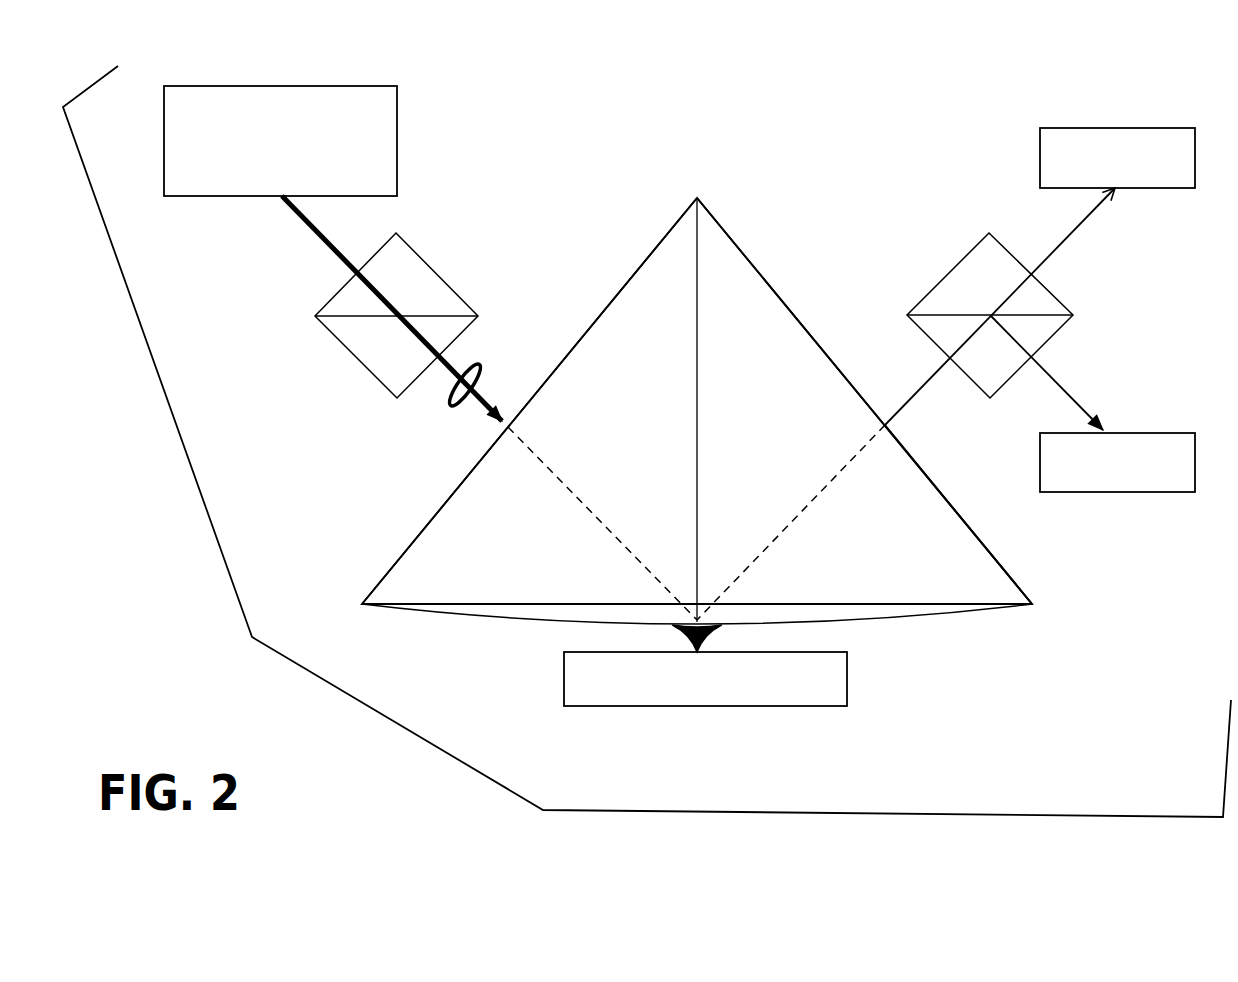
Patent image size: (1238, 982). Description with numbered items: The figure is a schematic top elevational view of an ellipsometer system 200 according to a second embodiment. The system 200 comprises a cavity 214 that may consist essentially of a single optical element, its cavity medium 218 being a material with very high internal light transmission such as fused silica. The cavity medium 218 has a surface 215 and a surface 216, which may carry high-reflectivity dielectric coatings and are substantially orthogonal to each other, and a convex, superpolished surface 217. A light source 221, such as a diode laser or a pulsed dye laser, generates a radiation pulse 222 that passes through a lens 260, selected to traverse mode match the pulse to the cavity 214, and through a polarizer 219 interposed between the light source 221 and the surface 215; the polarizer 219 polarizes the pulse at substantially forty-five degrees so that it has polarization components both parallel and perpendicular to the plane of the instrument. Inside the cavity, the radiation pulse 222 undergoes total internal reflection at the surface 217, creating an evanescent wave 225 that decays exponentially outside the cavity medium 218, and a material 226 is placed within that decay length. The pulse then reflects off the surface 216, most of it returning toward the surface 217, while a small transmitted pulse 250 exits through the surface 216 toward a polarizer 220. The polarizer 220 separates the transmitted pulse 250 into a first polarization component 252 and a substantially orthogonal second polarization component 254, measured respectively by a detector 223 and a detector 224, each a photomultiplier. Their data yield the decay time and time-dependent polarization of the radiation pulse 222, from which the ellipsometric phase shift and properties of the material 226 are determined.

The ellipsometer system 200 is at (252, 637).
The cavity 214 is at (760, 273).
The surface 215 is at (397, 563).
The surface 216 is at (1003, 568).
The surface 217 is at (901, 622).
The cavity medium 218 is at (667, 275).
The polarizer 219 is at (355, 358).
The polarizer 220 is at (1062, 302).
The light source 221 is at (398, 120).
The radiation pulse 222 is at (318, 240).
The detector 223 is at (1118, 126).
The detector 224 is at (1152, 494).
The evanescent wave 225 is at (677, 637).
The material 226 is at (597, 707).
The transmitted pulse 250 is at (920, 390).
The first polarization component 252 is at (1067, 238).
The second polarization component 254 is at (1073, 397).
The lens 260 is at (482, 360).